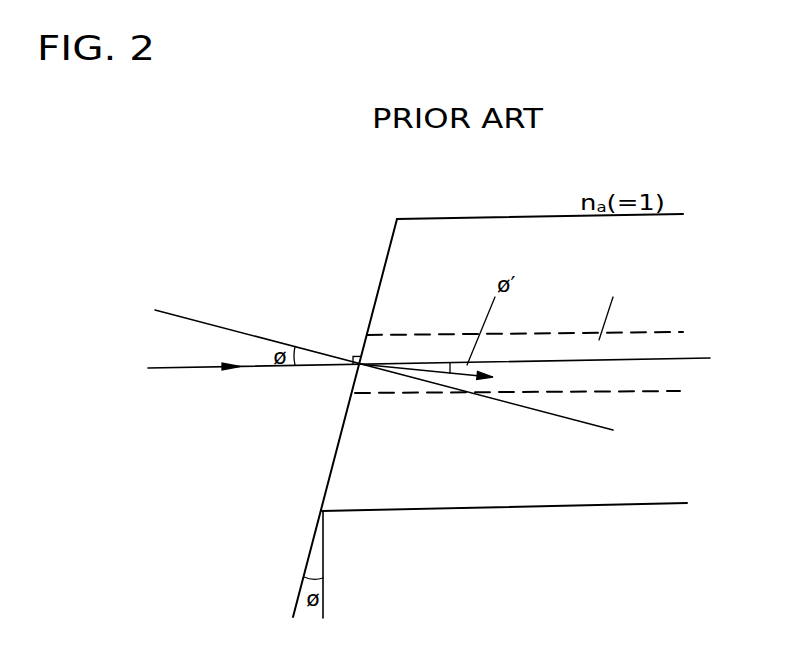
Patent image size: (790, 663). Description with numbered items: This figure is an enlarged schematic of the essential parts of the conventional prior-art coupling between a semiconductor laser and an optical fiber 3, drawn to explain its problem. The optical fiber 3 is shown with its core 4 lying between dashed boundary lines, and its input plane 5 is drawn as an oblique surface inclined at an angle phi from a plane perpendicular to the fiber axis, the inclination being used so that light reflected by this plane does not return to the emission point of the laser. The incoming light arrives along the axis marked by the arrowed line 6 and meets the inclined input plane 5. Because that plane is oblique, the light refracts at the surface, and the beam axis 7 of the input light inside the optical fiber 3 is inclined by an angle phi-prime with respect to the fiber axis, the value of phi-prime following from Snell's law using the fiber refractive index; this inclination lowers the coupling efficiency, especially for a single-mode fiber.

The optical fiber 3 is at (463, 263).
The core 4 is at (623, 390).
The input plane 5 is at (381, 282).
The incident light axis 6 is at (197, 368).
The beam axis 7 is at (437, 378).